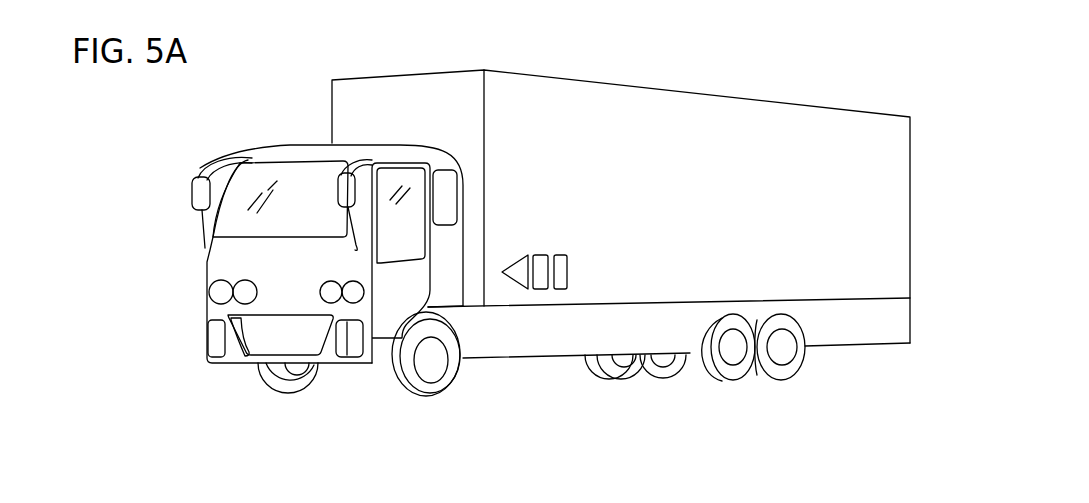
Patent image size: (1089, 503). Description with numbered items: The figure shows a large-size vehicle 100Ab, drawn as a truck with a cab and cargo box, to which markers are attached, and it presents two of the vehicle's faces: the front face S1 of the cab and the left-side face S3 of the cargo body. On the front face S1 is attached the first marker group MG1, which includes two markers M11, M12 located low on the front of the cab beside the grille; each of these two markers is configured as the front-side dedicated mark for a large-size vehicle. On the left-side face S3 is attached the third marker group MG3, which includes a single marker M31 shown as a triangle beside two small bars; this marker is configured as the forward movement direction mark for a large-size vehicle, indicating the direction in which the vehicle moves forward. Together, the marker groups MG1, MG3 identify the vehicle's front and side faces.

The large-size vehicle 100Ab is at (1067, 77).
The front face S1 is at (230, 260).
The left-side face S3 is at (824, 276).
The marker M31 is at (542, 252).
The third marker group MG3 is at (593, 231).
The marker M11 is at (245, 300).
The marker M12 is at (350, 300).
The first marker group MG1 is at (382, 447).